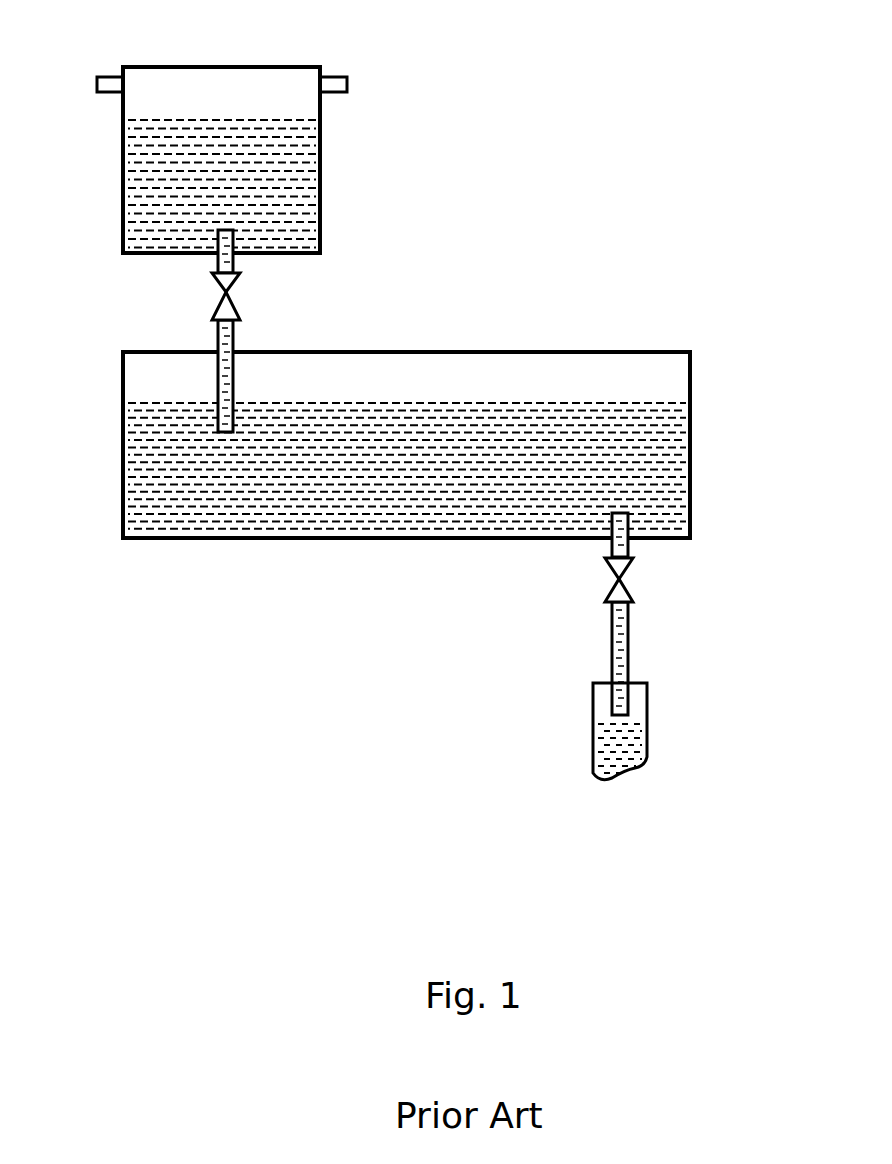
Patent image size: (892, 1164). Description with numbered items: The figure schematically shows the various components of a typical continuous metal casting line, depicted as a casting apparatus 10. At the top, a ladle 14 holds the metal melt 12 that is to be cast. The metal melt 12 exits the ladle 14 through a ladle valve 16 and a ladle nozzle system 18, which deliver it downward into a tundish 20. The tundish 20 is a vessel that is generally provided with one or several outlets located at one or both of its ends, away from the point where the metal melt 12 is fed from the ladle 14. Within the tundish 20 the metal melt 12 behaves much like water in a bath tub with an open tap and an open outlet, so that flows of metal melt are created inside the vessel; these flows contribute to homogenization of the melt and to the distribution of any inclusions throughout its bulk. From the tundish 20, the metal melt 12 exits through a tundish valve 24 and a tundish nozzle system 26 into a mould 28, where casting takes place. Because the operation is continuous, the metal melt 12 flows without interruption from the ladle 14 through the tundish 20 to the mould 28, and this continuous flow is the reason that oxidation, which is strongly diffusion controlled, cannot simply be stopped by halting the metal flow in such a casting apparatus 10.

The casting apparatus 10 is at (462, 149).
The metal melt 12 is at (300, 200).
The ladle 14 is at (277, 77).
The ladle valve 16 is at (226, 290).
The ladle nozzle system 18 is at (218, 322).
The tundish 20 is at (592, 354).
The tundish valve 24 is at (627, 573).
The tundish nozzle system 26 is at (628, 633).
The mould 28 is at (647, 713).